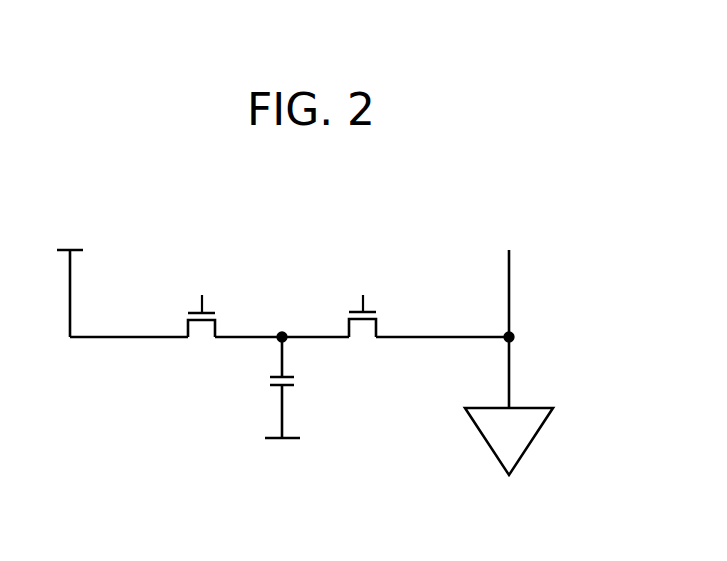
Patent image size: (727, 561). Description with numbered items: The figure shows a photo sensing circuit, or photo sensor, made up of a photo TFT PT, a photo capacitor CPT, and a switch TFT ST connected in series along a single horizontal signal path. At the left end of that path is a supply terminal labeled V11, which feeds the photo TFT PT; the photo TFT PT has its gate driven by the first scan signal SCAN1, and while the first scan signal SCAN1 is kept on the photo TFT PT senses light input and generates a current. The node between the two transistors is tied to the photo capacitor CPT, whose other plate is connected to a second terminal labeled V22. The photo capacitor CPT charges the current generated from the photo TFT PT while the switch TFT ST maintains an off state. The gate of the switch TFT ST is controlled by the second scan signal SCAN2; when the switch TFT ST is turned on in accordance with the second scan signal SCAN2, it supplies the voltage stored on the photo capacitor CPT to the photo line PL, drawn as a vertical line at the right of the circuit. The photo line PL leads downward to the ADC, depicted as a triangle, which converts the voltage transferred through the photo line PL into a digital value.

The first voltage source V11 is at (70, 280).
The first scan signal SCAN1 is at (202, 291).
The photo TFT PT is at (201, 340).
The second scan signal SCAN2 is at (362, 291).
The switch TFT ST is at (362, 339).
The photo capacitor CPT is at (300, 385).
The second voltage source V22 is at (282, 455).
The photo line PL is at (509, 283).
The element ADC is at (509, 441).